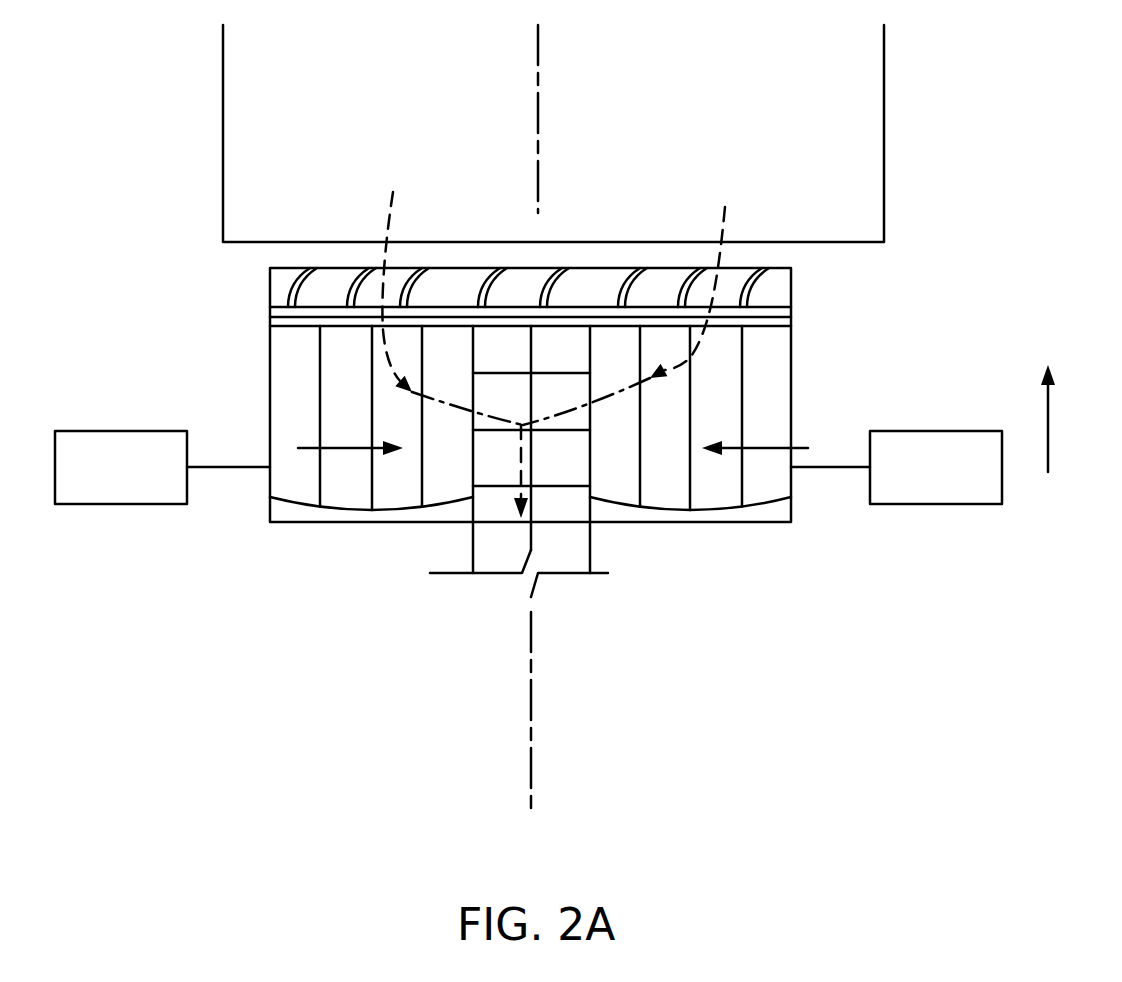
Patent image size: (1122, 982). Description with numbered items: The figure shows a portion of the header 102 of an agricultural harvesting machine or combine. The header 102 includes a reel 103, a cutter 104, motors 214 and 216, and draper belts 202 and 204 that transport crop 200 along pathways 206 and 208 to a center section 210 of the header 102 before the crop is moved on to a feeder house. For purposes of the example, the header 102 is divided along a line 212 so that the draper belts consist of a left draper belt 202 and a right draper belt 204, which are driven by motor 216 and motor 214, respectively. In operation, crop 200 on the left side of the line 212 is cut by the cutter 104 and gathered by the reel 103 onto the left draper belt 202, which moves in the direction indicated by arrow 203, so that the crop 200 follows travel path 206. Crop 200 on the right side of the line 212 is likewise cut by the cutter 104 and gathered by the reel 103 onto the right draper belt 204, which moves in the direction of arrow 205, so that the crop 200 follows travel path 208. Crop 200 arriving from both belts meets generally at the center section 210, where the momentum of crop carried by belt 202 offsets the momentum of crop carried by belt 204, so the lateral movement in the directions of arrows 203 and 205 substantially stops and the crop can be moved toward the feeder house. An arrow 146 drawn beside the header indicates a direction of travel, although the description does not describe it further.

The header 102 is at (203, 370).
The reel 103 is at (790, 298).
The cutter 104 is at (789, 329).
The direction of travel 146 is at (1066, 418).
The crop 200 is at (367, 101).
The left draper belt 202 is at (355, 483).
The arrow 203 is at (343, 446).
The right draper belt 204 is at (678, 480).
The arrow 205 is at (760, 447).
The travel path 206 is at (388, 223).
The travel path 208 is at (725, 228).
The center section 210 is at (508, 482).
The line 212 is at (532, 720).
The motor 214 is at (919, 491).
The motor 216 is at (104, 491).